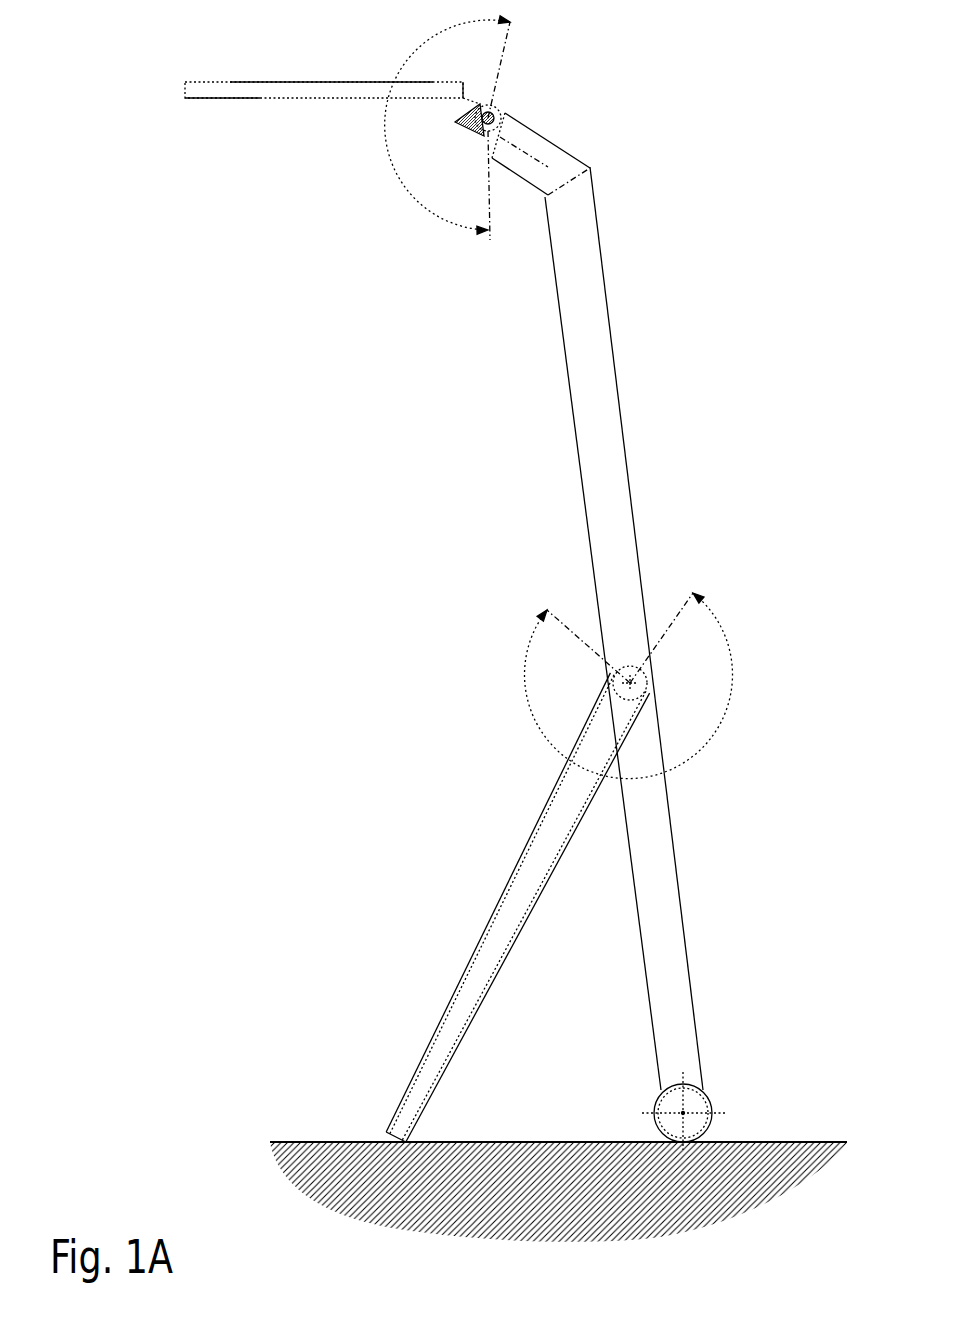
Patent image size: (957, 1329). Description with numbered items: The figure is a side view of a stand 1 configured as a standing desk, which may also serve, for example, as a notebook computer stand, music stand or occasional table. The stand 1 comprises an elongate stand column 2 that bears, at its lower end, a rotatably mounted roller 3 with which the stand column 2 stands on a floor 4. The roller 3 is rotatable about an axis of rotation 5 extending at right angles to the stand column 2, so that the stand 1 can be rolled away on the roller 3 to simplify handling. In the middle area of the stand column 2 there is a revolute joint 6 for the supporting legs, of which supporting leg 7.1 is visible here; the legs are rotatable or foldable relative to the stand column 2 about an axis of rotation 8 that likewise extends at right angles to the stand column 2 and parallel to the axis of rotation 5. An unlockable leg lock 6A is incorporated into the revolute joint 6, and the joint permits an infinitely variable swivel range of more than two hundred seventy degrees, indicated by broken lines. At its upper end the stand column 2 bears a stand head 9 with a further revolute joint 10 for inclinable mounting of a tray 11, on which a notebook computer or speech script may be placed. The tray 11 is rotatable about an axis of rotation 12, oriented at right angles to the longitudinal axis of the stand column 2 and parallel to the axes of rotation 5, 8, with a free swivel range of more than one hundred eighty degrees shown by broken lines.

The stand 1 is at (682, 628).
The stand column 2 is at (665, 928).
The roller 3 is at (700, 1105).
The floor 4 is at (333, 1142).
The axis of rotation 5 is at (680, 1113).
The revolute joint 6 is at (563, 686).
The unlockable leg lock 6A is at (630, 683).
The supporting leg 7.1 is at (522, 897).
The axis of rotation 8 is at (636, 688).
The stand head 9 is at (560, 163).
The revolute joint 10 is at (500, 110).
The tray 11 is at (277, 91).
The axis of rotation 12 is at (457, 125).